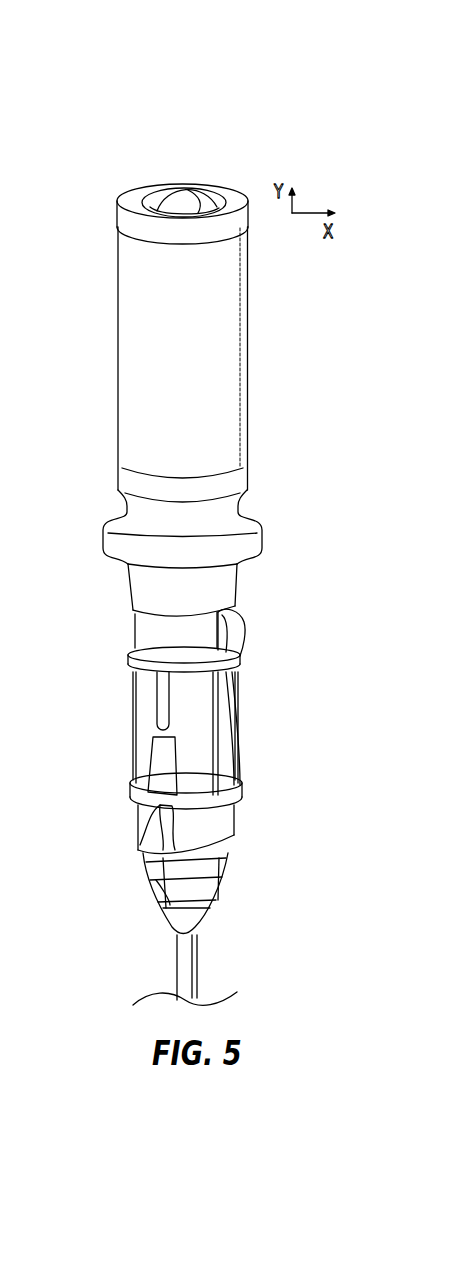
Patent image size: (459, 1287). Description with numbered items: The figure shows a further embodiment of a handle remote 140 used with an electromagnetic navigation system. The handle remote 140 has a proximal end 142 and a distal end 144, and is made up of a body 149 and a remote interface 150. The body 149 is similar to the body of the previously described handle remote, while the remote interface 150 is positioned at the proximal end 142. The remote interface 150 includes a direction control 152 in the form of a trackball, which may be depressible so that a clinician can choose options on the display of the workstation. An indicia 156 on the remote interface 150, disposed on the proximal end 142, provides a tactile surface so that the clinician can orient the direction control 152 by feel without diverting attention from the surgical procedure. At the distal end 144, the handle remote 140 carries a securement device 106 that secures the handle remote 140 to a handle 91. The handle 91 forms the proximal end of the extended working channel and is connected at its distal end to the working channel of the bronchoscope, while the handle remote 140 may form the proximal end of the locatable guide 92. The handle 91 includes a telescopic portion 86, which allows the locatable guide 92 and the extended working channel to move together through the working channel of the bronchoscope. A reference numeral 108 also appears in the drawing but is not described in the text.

The handle remote 140 is at (64, 354).
The remote interface 150 is at (126, 146).
The proximal end 142 is at (128, 207).
The indicia 156 is at (182, 189).
The direction control 152 is at (192, 200).
The body 149 is at (150, 405).
The flange 108 is at (108, 542).
The distal end 144 is at (143, 590).
The securement device 106 is at (240, 627).
The handle 91 is at (237, 763).
The locatable guide 92 is at (228, 694).
The telescopic portion 86 is at (195, 935).